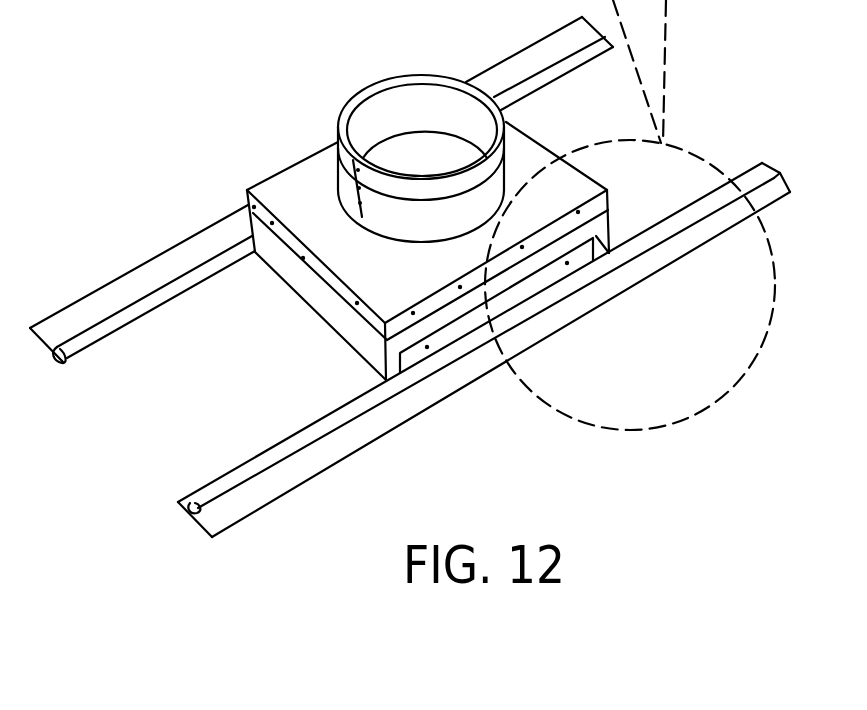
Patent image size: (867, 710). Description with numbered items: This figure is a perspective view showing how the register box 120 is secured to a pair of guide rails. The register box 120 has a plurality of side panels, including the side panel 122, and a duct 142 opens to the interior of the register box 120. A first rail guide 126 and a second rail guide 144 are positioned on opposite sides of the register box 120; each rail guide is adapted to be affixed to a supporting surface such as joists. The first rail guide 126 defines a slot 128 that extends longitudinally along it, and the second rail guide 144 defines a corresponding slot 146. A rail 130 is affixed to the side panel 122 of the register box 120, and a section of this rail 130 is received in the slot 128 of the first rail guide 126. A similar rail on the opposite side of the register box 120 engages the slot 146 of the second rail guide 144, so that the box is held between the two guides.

The register box 120 is at (293, 180).
The side panel 122 is at (389, 350).
The rail guide 126 is at (336, 452).
The slot 128 is at (179, 500).
The rail 130 is at (596, 236).
The duct 142 is at (404, 85).
The second rail guide 144 is at (182, 248).
The slot 146 is at (68, 362).